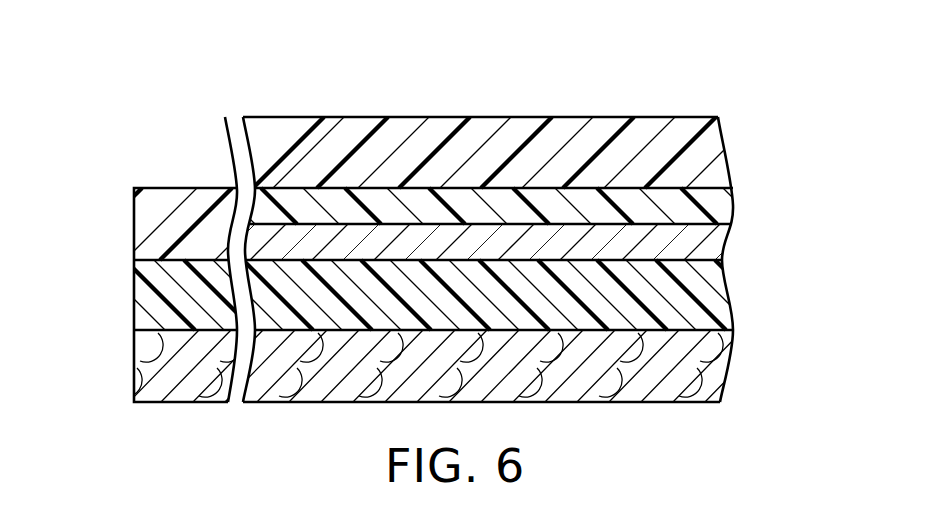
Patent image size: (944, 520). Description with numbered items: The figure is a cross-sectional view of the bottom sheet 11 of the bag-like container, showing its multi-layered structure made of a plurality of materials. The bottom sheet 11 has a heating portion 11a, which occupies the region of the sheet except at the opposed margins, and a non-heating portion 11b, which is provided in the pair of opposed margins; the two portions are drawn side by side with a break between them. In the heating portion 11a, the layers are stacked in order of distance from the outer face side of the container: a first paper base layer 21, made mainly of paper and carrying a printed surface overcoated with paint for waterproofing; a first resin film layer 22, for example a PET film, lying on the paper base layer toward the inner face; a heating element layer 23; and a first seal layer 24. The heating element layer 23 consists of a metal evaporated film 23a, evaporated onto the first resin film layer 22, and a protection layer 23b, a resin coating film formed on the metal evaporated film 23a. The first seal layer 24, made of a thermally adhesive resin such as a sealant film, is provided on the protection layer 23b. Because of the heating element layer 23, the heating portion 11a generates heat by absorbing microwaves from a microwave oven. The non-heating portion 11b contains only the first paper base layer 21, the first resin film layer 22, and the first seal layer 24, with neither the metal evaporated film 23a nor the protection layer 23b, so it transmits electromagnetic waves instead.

The bottom sheet 11 is at (460, 212).
The heating portion 11a is at (502, 105).
The non-heating portion 11b is at (167, 175).
The first paper base layer 21 is at (150, 372).
The first resin film layer 22 is at (150, 300).
The heating element layer 23 is at (546, 223).
The metal evaporated film 23a is at (713, 240).
The protection layer 23b is at (713, 206).
The first seal layer 24 is at (150, 238).